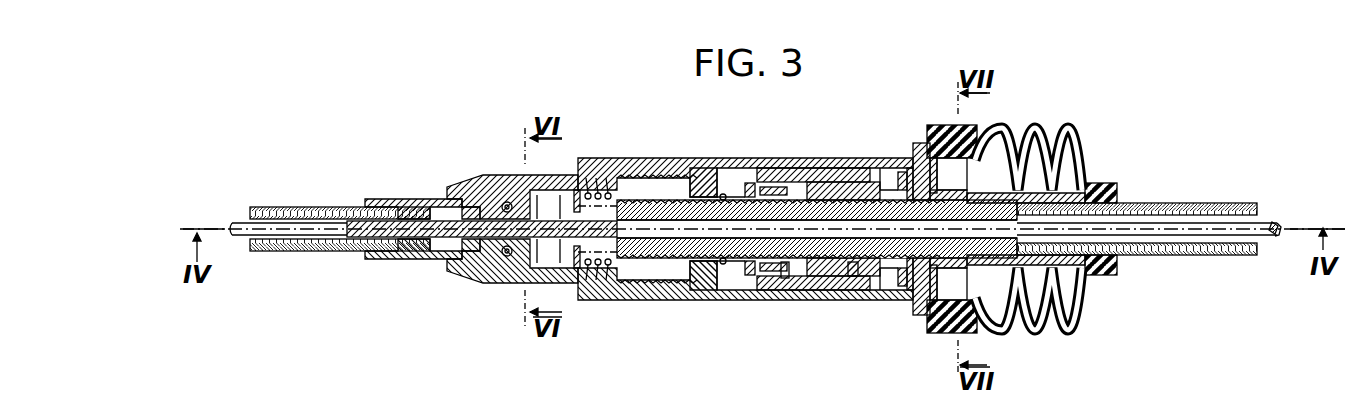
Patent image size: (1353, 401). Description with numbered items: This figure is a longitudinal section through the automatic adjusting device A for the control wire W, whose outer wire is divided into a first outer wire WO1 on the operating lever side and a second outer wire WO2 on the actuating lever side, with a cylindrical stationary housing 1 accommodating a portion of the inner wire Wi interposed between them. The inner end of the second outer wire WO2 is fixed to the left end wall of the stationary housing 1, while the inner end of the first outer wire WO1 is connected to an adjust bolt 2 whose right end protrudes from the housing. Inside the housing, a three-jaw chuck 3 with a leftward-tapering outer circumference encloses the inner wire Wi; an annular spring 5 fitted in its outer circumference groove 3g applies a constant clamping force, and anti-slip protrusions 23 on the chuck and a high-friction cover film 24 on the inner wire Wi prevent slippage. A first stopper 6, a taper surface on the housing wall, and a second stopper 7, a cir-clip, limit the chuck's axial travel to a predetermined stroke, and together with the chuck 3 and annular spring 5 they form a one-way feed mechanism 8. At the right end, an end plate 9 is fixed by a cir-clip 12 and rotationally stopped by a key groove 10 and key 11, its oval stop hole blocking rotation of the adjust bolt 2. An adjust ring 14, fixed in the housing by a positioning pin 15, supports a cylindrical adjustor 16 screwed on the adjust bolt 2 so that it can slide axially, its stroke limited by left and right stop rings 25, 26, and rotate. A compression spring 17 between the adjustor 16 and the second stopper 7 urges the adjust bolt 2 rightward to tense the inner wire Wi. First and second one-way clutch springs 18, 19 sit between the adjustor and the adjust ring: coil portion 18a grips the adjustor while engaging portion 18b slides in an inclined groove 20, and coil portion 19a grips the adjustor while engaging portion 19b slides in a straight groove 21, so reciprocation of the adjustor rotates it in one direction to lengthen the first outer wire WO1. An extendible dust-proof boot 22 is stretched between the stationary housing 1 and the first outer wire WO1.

The automatic adjusting device A is at (641, 160).
The stationary housing 1 is at (692, 165).
The adjust bolt 2 is at (985, 158).
The three-jaw chuck 3 is at (505, 263).
The outer circumference groove 3g is at (512, 268).
The annular spring 5 is at (505, 202).
The first stopper 6 is at (486, 205).
The second stopper 7 is at (574, 197).
The one-way feed mechanism 8 is at (552, 250).
The end plate 9 is at (918, 160).
The key groove 10 is at (950, 318).
The key 11 is at (921, 316).
The cir-clip 12 is at (948, 229).
The adjust ring 14 is at (835, 180).
The positioning pin 15 is at (815, 278).
The adjustor 16 is at (805, 180).
The compression spring 17 is at (728, 190).
The first one-way clutch spring 18 is at (772, 186).
The coil portion 18a is at (763, 272).
The engaging portion 18b is at (785, 279).
The second one-way clutch spring 19 is at (882, 172).
The coil portion 19a is at (888, 272).
The engaging portion 19b is at (876, 286).
The inclined groove 20 is at (746, 270).
The straight groove 21 is at (746, 182).
The dust-proof boot 22 is at (1076, 148).
The anti-slip protrusions 23 is at (492, 262).
The cover film 24 is at (395, 246).
The left stop ring 25 is at (716, 300).
The right stop ring 26 is at (902, 172).
The second outer wire WO2 is at (307, 208).
The first outer wire WO1 is at (1190, 207).
The inner wire Wi is at (1278, 224).
The control wire W is at (1213, 254).